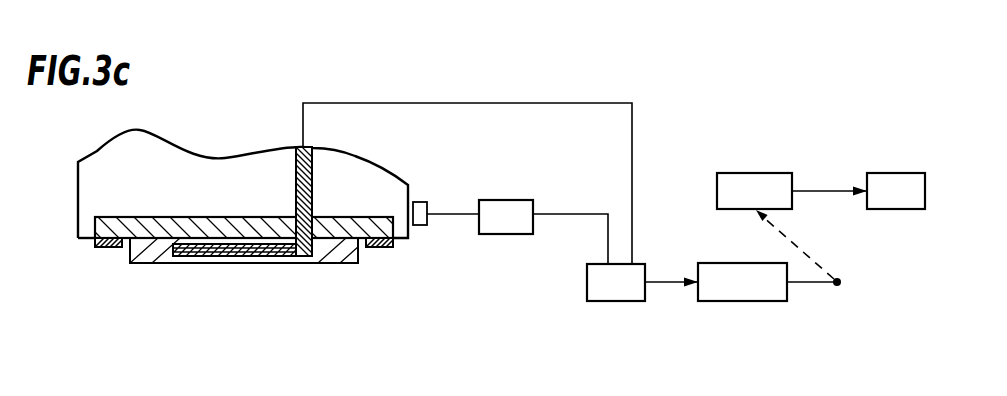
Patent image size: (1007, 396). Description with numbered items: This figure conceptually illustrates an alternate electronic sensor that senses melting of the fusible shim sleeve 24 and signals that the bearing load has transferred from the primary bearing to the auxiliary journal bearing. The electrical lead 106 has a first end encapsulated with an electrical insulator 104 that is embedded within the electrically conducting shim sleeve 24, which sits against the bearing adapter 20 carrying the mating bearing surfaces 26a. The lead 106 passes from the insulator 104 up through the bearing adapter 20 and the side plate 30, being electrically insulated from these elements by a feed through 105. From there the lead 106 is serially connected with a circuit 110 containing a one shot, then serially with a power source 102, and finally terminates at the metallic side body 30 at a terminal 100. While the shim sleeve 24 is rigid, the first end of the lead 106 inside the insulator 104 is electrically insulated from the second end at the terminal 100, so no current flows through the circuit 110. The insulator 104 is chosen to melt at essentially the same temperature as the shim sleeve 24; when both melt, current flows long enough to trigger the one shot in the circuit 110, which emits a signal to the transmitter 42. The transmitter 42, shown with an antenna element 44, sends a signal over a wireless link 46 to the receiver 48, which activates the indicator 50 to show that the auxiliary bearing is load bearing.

The bearing adapter 20 is at (243, 222).
The fusible shim sleeve 24 is at (143, 255).
The mating bearing surfaces 26a is at (95, 243).
The side plate 30 is at (178, 156).
The transmitter 42 is at (763, 301).
The antenna 44 is at (838, 287).
The wireless signal link 46 is at (815, 258).
The receiver 48 is at (763, 173).
The indicator 50 is at (905, 173).
The terminal 100 is at (417, 202).
The power source 102 is at (512, 200).
The electrical insulator 104 is at (197, 247).
The feed through 105 is at (305, 147).
The electrical lead 106 is at (255, 252).
The circuit 110 is at (610, 301).